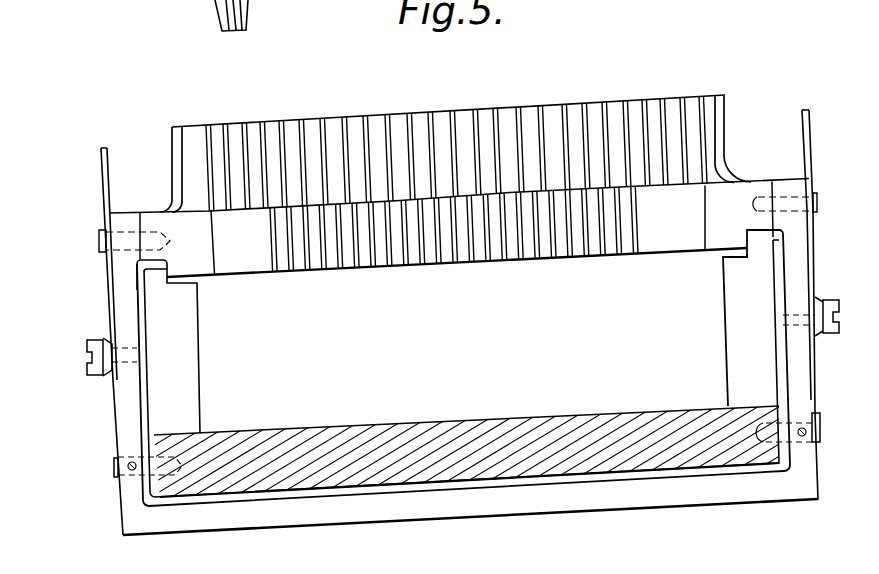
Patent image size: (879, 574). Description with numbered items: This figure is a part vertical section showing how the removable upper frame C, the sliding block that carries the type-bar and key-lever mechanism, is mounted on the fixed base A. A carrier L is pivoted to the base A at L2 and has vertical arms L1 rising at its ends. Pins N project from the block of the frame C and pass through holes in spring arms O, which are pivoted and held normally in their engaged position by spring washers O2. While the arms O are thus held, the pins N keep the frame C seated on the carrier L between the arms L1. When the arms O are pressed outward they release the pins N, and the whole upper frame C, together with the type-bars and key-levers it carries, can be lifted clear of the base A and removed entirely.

The upper frame C is at (434, 121).
The pins N is at (111, 214).
The spring arms O is at (107, 160).
The spring washers O2 is at (102, 365).
The carrier L is at (470, 490).
The vertical arms L1 is at (800, 373).
The pivot L2 is at (800, 436).
The fixed base A is at (451, 429).